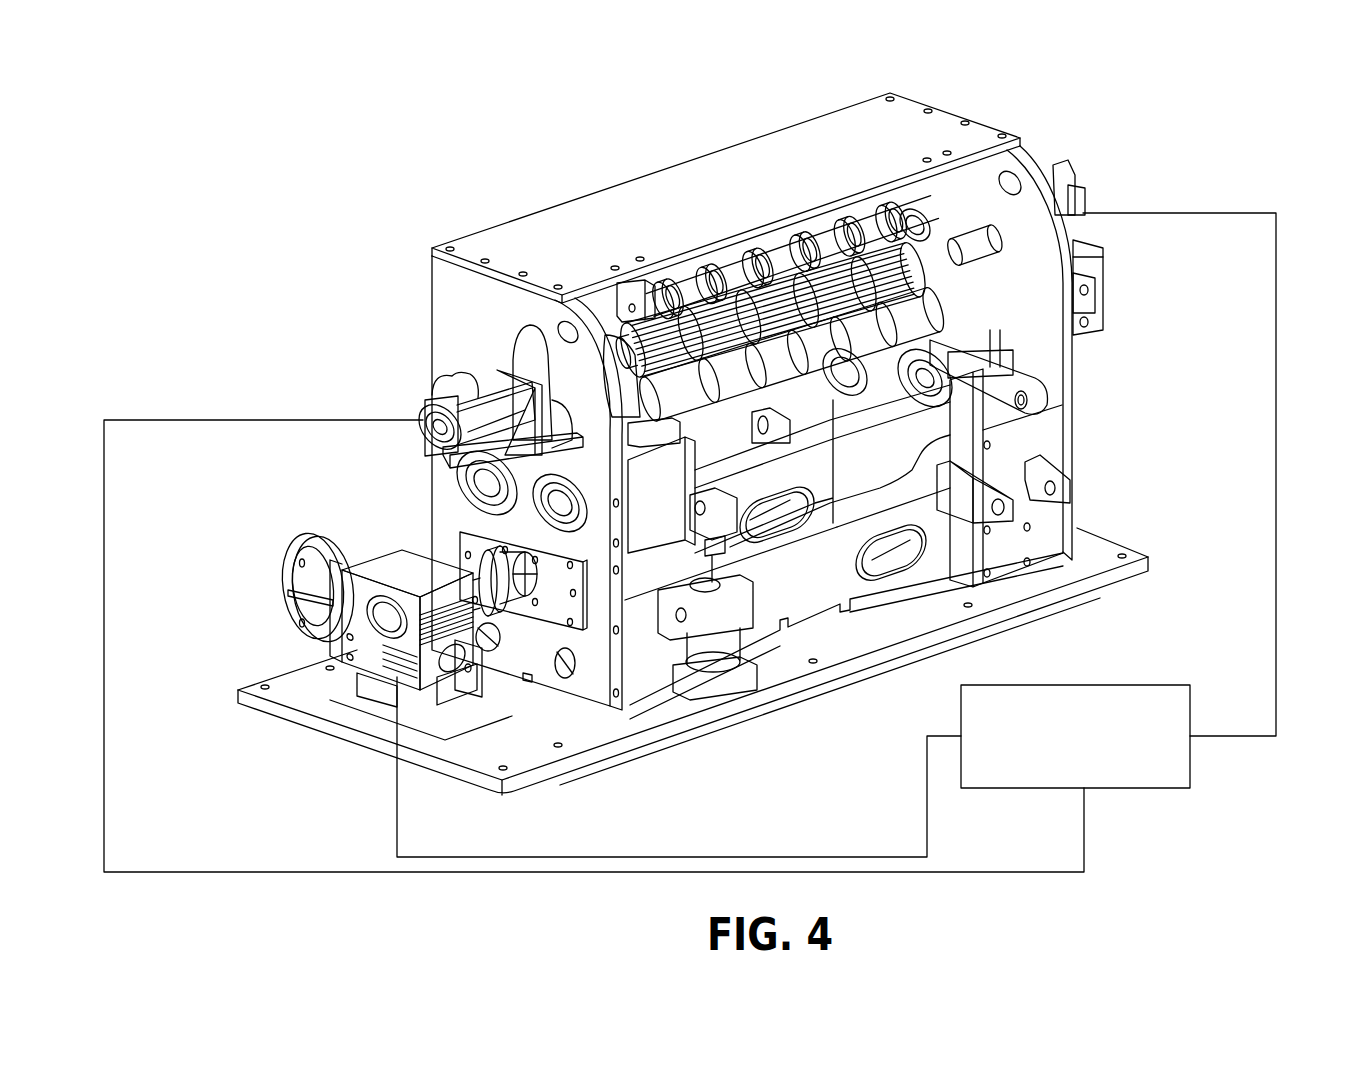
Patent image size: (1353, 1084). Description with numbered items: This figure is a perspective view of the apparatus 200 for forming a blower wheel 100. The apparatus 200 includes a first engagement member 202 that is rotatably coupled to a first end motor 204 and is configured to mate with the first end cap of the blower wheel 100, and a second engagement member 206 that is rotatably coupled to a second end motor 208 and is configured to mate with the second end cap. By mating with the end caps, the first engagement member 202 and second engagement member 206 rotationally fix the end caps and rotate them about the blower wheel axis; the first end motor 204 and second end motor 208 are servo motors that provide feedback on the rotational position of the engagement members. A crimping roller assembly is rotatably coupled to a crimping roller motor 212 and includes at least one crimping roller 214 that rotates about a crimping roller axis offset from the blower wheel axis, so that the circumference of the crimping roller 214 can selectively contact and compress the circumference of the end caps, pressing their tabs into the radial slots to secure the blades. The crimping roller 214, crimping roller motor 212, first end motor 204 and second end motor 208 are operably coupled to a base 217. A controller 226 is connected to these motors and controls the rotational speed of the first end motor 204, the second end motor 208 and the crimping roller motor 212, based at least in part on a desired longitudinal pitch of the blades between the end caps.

The blower wheel 100 is at (760, 255).
The apparatus 200 is at (1137, 93).
The first engagement member 202 is at (560, 293).
The first end motor 204 is at (423, 420).
The second engagement member 206 is at (922, 227).
The second end motor 208 is at (1083, 205).
The crimping roller motor 212 is at (297, 623).
The crimping roller 214 is at (658, 300).
The base 217 is at (633, 735).
The controller 226 is at (1190, 773).